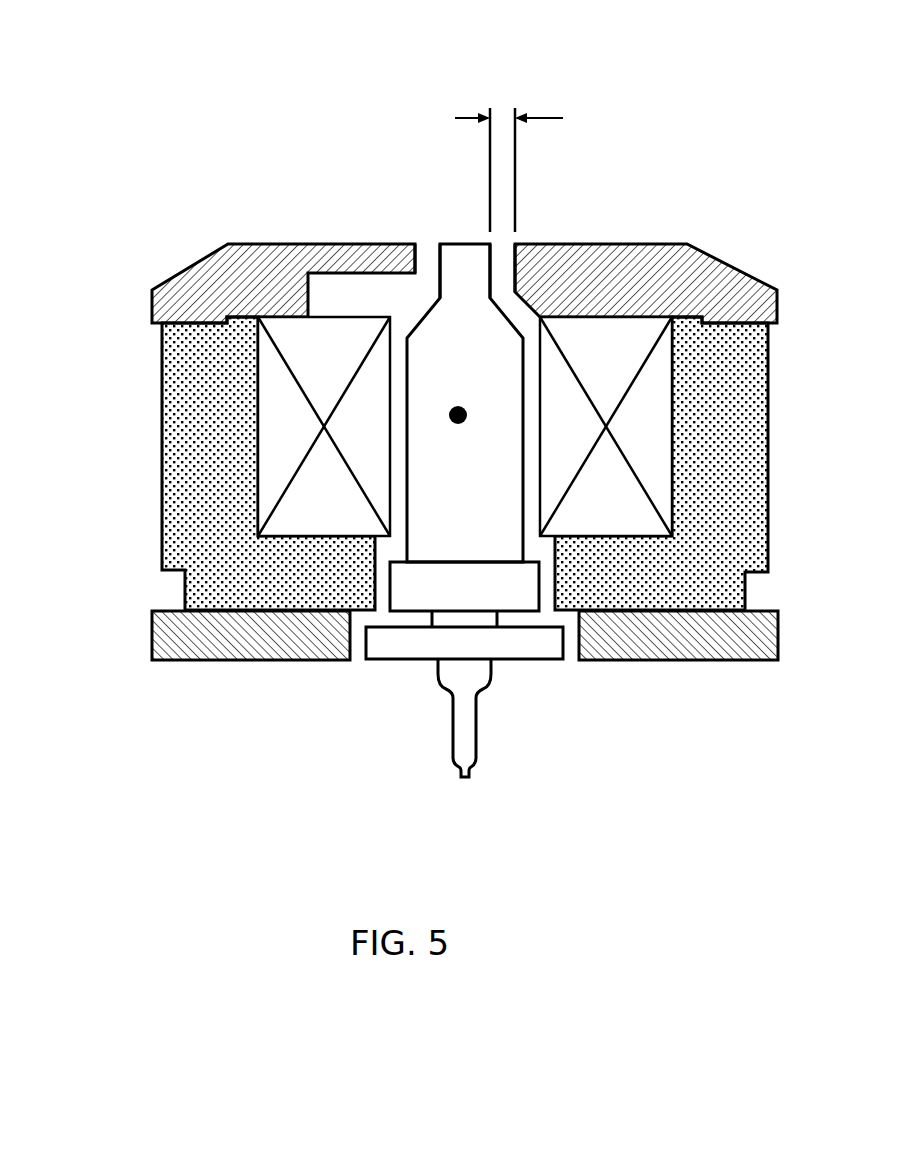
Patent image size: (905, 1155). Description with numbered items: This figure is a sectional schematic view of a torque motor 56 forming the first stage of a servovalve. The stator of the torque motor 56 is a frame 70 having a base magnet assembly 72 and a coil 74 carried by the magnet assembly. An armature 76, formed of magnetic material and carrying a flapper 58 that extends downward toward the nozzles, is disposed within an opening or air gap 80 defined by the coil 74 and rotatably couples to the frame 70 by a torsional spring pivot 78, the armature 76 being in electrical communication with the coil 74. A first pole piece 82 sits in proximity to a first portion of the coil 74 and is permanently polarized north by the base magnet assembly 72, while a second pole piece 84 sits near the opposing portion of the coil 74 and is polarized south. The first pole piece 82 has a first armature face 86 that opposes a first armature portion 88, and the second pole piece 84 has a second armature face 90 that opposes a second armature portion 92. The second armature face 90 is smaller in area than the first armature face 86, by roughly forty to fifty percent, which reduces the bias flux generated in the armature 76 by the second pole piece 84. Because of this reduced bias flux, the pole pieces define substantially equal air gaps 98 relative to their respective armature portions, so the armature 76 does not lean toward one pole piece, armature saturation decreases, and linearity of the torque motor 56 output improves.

The torque motor 56 is at (676, 107).
The flapper 58 is at (467, 727).
The frame 70 is at (175, 467).
The base magnet assembly 72 is at (425, 653).
The coil 74 is at (650, 465).
The armature 76 is at (460, 252).
The torsional spring pivot 78 is at (458, 415).
The air gap 80 is at (383, 292).
The first pole piece 82 is at (622, 258).
The second pole piece 84 is at (258, 262).
The first armature face 86 is at (522, 250).
The first armature portion 88 is at (487, 270).
The second armature face 90 is at (408, 240).
The second armature portion 92 is at (442, 265).
The air gap 98 is at (543, 113).